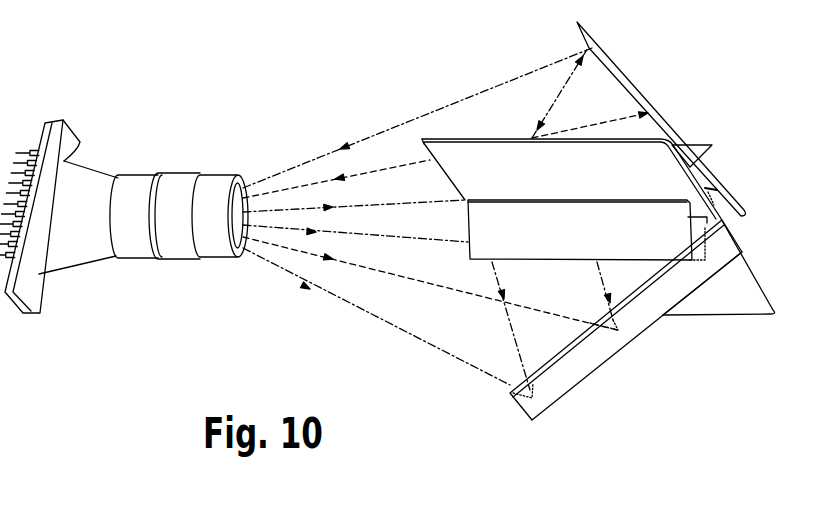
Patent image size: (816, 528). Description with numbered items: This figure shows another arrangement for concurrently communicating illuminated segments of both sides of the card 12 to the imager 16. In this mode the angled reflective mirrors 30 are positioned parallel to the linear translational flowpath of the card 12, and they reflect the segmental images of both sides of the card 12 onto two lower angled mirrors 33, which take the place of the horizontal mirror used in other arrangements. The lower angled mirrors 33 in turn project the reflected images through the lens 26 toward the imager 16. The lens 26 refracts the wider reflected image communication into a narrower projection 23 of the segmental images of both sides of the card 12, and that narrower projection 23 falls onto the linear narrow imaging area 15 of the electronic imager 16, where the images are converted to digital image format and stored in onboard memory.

The card 12 is at (484, 184).
The linear narrow imaging area 15 is at (63, 163).
The imager 16 is at (65, 138).
The narrower projection 23 is at (72, 245).
The lens 26 is at (173, 183).
The angled reflective mirrors 30 is at (580, 230).
The lower angled mirrors 33 is at (535, 403).